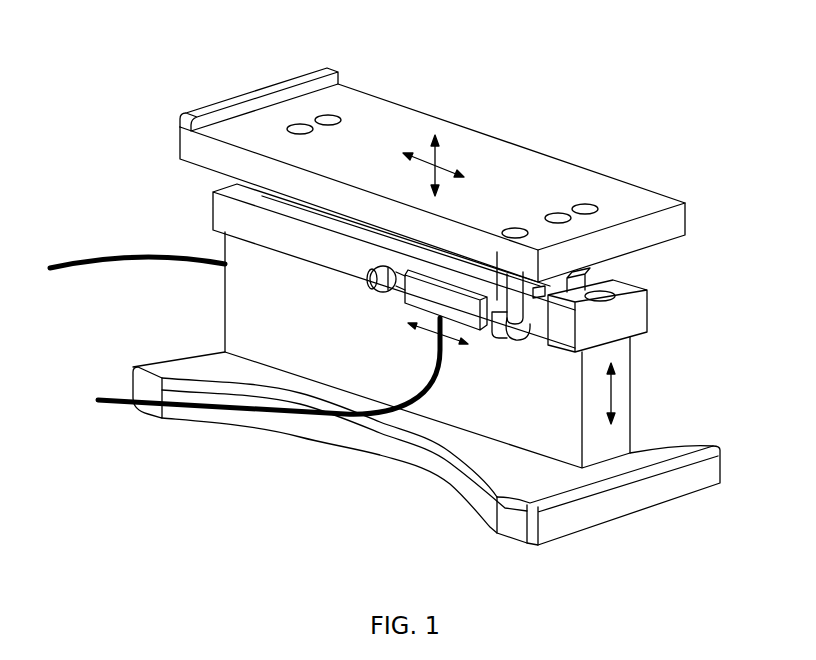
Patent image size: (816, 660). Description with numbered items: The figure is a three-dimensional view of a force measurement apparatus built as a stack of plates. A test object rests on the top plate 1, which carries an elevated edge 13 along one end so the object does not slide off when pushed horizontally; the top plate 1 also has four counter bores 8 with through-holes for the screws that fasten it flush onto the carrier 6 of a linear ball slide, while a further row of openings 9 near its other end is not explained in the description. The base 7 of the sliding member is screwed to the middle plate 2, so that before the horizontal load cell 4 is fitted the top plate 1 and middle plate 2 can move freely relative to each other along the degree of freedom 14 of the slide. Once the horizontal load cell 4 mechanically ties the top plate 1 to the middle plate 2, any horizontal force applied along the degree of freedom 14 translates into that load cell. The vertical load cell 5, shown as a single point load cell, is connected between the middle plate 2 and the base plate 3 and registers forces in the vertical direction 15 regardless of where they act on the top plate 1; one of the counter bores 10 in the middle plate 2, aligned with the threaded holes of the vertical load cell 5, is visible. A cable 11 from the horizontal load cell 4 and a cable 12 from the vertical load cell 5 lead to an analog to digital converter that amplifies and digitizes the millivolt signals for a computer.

The top plate 1 is at (520, 167).
The middle plate 2 is at (634, 315).
The base plate 3 is at (662, 449).
The horizontal load cell 4 is at (425, 295).
The vertical load cell 5 is at (258, 290).
The carrier 6 is at (557, 292).
The base of the sliding member 7 is at (575, 287).
The counter bores 8 is at (332, 120).
The mounting holes 9 is at (518, 230).
The counter bore 10 is at (604, 296).
The cable 11 is at (112, 402).
The cable 12 is at (135, 266).
The elevated edge 13 is at (250, 102).
The degree of freedom 14 is at (447, 160).
The vertical direction 15 is at (442, 140).